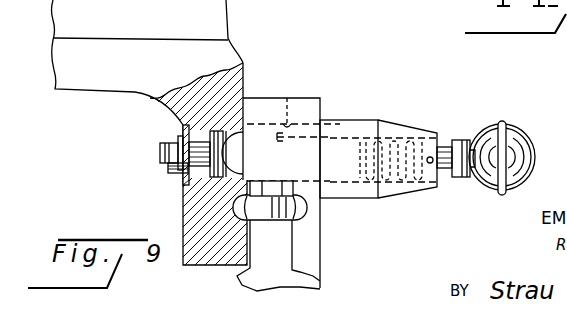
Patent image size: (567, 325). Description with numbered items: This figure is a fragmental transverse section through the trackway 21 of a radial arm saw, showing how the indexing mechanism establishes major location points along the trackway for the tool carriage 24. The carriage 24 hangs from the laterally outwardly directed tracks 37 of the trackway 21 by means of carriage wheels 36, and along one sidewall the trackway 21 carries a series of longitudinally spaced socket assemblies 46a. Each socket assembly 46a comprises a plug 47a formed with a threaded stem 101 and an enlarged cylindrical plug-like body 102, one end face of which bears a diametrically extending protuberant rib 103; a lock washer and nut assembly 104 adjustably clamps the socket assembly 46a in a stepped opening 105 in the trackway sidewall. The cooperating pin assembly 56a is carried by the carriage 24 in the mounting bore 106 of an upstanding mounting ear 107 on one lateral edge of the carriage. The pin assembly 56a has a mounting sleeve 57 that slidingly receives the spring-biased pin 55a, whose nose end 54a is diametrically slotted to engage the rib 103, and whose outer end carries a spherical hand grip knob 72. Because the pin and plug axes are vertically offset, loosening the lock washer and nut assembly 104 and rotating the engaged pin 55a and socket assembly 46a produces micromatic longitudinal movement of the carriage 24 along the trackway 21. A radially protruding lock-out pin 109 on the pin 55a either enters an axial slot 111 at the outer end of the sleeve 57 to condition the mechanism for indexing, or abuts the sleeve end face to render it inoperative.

The trackway 21 is at (239, 42).
The protuberant rib 103 is at (244, 82).
The plug-like body 102 is at (184, 200).
The plug 47a is at (190, 185).
The socket assembly 46a is at (212, 126).
The threaded stem 101 is at (161, 150).
The lock washer and nut assembly 104 is at (172, 140).
The stepped openings 105 is at (198, 162).
The nose end 54a is at (235, 155).
The mounting bore 106 is at (303, 106).
The mounting ear 107 is at (287, 98).
The carriage wheel 36 is at (307, 207).
The track 37 is at (241, 220).
The tool carriage 24 is at (320, 270).
The pin assembly 56a is at (391, 120).
The mounting sleeve 57 is at (397, 186).
The lock-out pin 109 is at (428, 160).
The axial slot 111 is at (440, 150).
The pin 55a is at (449, 170).
The spherical hand grip knob 72 is at (516, 128).